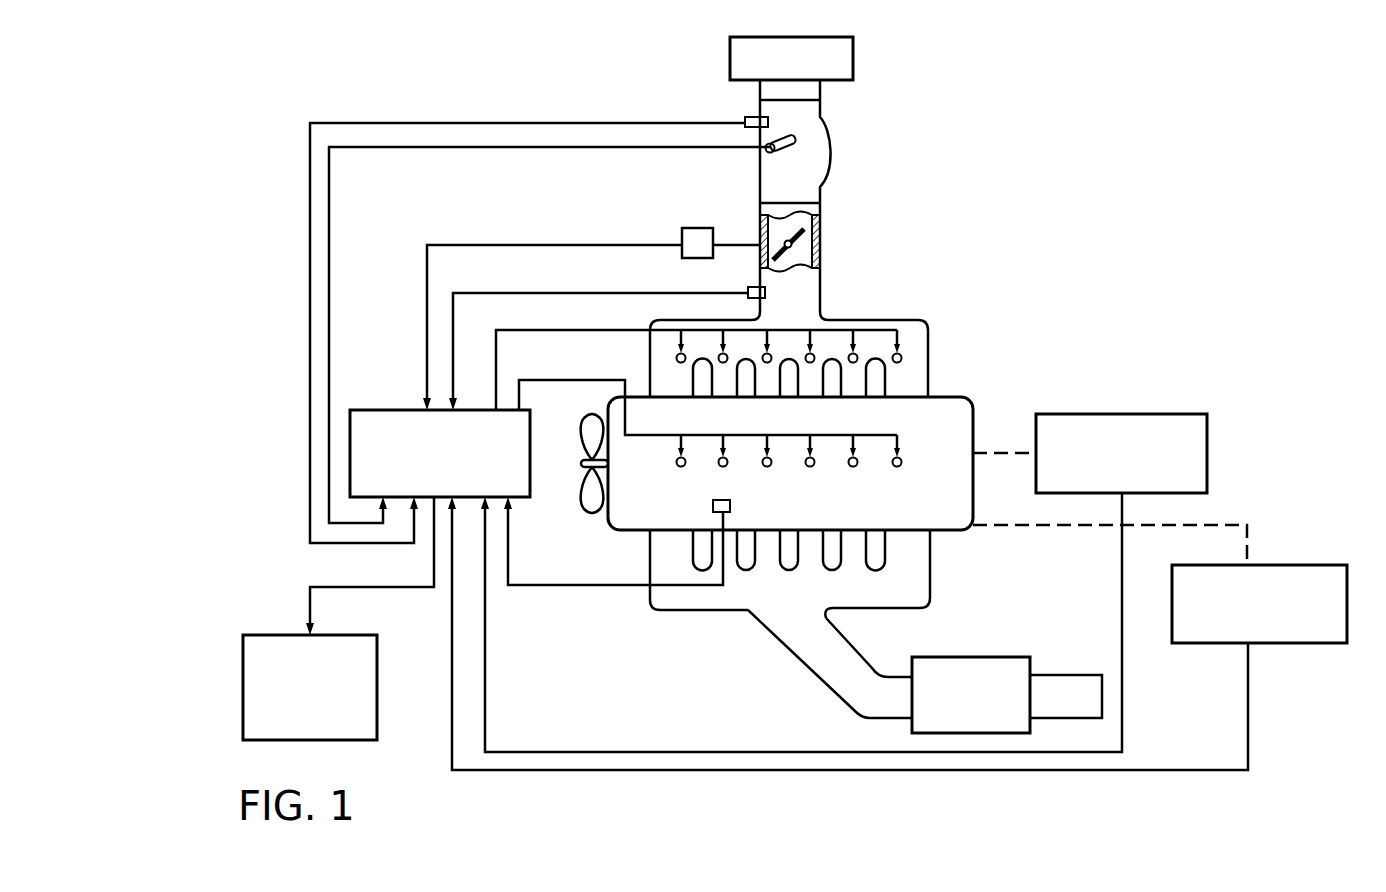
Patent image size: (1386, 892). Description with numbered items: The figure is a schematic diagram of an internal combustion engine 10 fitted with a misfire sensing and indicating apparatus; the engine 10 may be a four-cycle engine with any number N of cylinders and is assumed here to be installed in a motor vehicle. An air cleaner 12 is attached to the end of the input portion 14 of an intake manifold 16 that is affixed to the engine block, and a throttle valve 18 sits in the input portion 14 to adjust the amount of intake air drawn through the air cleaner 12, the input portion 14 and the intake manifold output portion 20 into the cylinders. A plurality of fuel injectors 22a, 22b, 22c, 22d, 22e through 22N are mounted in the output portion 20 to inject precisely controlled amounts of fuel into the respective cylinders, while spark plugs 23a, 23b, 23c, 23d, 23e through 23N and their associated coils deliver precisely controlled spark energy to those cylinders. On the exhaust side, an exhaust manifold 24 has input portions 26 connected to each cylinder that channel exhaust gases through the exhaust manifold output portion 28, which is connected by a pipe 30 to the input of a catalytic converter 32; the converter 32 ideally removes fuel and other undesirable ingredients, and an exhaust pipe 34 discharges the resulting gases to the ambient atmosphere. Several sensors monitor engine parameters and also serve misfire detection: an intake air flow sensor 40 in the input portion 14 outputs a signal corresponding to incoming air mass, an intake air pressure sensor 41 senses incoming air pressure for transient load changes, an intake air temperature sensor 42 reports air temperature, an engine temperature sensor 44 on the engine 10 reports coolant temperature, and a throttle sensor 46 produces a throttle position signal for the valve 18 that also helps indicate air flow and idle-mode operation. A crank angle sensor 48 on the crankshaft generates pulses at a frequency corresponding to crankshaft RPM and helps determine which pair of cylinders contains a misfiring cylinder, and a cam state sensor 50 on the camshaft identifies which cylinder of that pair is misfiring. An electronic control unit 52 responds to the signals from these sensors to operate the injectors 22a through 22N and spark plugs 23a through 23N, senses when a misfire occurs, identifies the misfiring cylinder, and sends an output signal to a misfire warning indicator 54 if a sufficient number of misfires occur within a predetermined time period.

The internal combustion engine 10 is at (957, 380).
The air cleaner 12 is at (853, 57).
The input portion of intake manifold 14 is at (833, 152).
The intake manifold 16 is at (893, 290).
The throttle valve 18 is at (820, 245).
The intake manifold output portion 20 is at (907, 320).
The fuel injector 22a is at (681, 364).
The fuel injector 22b is at (723, 364).
The fuel injector 22c is at (767, 364).
The fuel injector 22d is at (810, 364).
The fuel injector 22e is at (853, 364).
The fuel injector 22N is at (898, 364).
The spark plug 23a is at (681, 468).
The spark plug 23b is at (723, 468).
The spark plug 23c is at (767, 468).
The spark plug 23d is at (810, 468).
The spark plug 23e is at (853, 468).
The spark plug 23N is at (897, 468).
The exhaust manifold 24 is at (965, 550).
The exhaust manifold input portions 26 is at (930, 595).
The exhaust manifold output portion 28 is at (855, 650).
The pipe 30 is at (885, 720).
The catalytic converter 32 is at (960, 657).
The exhaust pipe 34 is at (1060, 675).
The intake air flow sensor 40 is at (784, 152).
The intake air pressure sensor 41 is at (748, 290).
The intake air temperature sensor 42 is at (745, 118).
The engine temperature sensor 44 is at (730, 506).
The throttle sensor 46 is at (696, 228).
The crank angle sensor 48 is at (1122, 414).
The cam state sensor 50 is at (1258, 565).
The electronic control unit 52 is at (387, 410).
The misfire warning indicator 54 is at (290, 635).